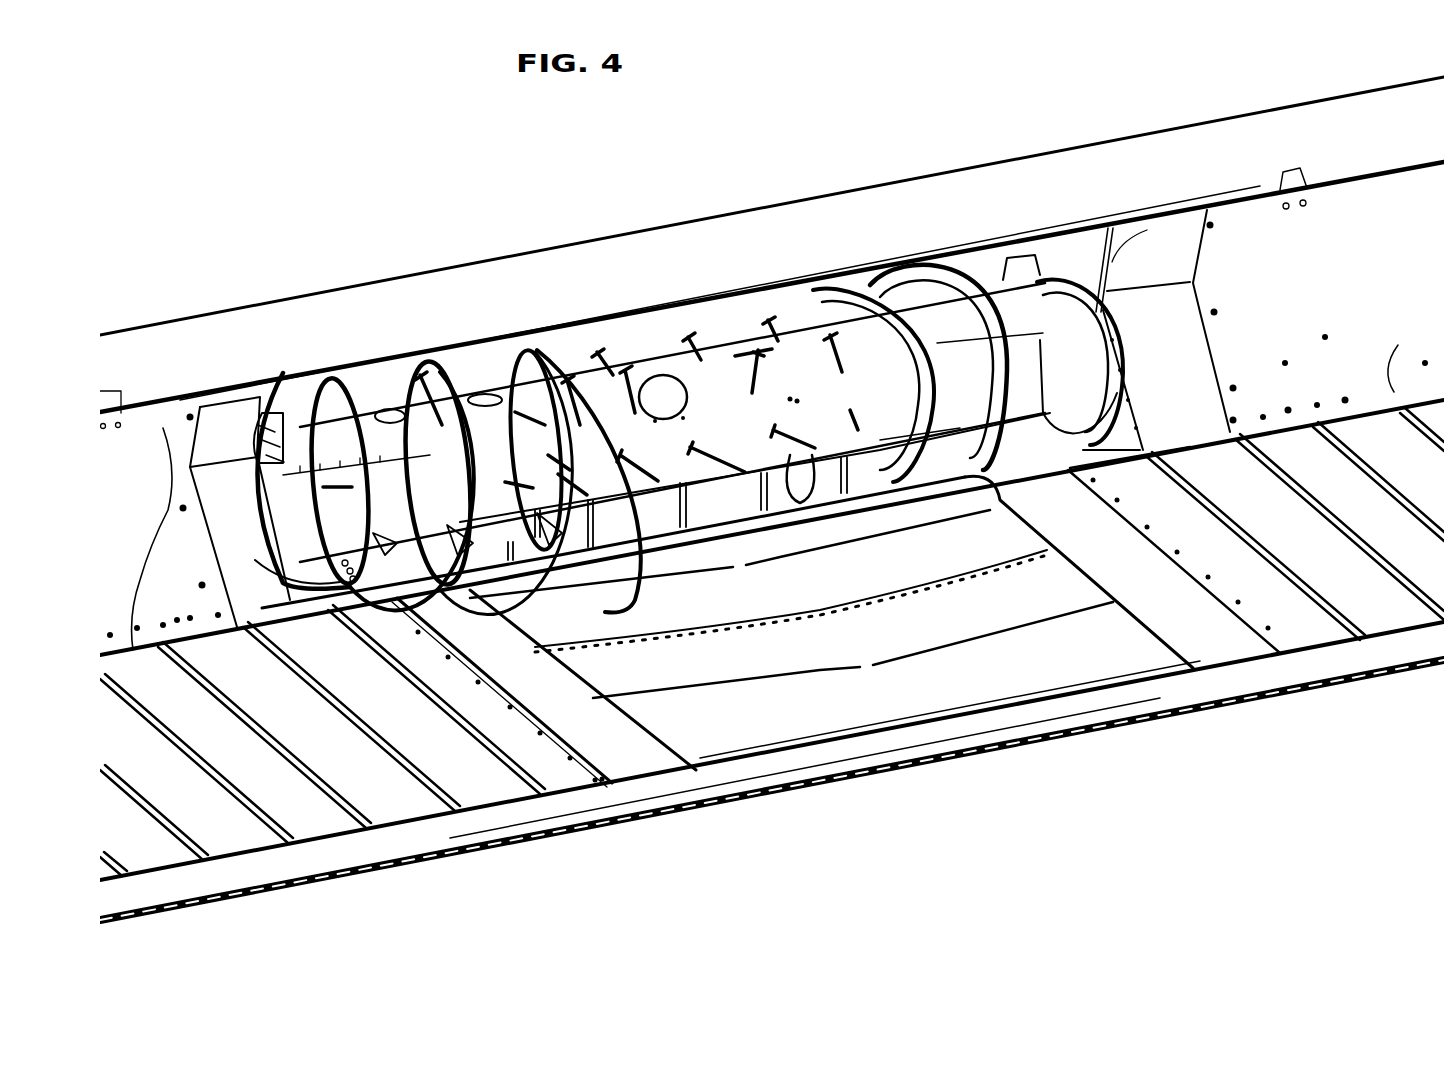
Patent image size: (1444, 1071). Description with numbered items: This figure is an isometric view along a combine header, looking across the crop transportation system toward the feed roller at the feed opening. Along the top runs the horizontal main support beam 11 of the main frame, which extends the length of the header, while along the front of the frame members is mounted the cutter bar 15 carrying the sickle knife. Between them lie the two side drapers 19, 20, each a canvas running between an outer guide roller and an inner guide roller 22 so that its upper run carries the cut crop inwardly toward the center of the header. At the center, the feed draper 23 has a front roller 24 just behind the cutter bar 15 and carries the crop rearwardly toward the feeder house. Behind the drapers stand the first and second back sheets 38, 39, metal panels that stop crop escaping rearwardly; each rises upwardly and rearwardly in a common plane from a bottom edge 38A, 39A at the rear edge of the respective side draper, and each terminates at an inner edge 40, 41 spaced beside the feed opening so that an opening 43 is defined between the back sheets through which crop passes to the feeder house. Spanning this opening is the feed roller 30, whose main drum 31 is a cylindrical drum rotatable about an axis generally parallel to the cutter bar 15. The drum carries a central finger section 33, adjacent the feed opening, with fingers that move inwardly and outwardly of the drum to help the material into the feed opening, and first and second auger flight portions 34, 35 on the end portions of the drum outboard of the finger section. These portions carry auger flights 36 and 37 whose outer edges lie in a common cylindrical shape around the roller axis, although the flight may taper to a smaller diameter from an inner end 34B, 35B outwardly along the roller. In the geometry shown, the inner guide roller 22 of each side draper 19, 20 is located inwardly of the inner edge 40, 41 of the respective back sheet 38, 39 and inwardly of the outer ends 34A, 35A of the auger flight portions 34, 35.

The main support beam 11 is at (356, 328).
The cutter bar 15 is at (932, 772).
The side draper 19 is at (560, 775).
The side draper 20 is at (1232, 648).
The inner guide roller 22 is at (657, 757).
The feed draper 23 is at (845, 700).
The front roller 24 is at (1005, 682).
The feed roller 30 is at (650, 436).
The main drum 31 is at (740, 423).
The finger section 33 is at (795, 346).
The first auger flight portion 34 is at (443, 380).
The outer end of first auger flight portion 34A is at (290, 580).
The inner end of first auger flight portion 34B is at (555, 438).
The second auger flight portion 35 is at (883, 303).
The outer end of second auger flight portion 35A is at (1112, 370).
The inner end of second auger flight portion 35B is at (800, 482).
The auger flight 36 is at (478, 548).
The auger flight 37 is at (903, 463).
The first back sheet 38 is at (168, 428).
The bottom edge of first back sheet 38A is at (172, 520).
The second back sheet 39 is at (1247, 250).
The bottom edge of second back sheet 39A is at (1398, 345).
The inner edge of first back sheet 40 is at (263, 493).
The inner edge of second back sheet 41 is at (1147, 232).
The opening 43 is at (720, 318).